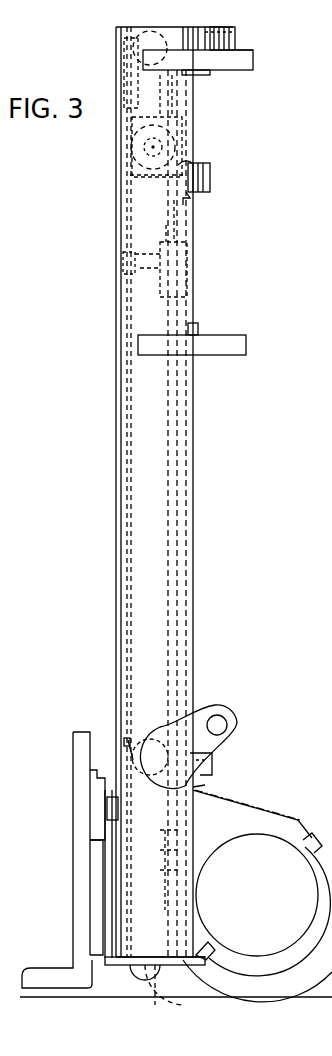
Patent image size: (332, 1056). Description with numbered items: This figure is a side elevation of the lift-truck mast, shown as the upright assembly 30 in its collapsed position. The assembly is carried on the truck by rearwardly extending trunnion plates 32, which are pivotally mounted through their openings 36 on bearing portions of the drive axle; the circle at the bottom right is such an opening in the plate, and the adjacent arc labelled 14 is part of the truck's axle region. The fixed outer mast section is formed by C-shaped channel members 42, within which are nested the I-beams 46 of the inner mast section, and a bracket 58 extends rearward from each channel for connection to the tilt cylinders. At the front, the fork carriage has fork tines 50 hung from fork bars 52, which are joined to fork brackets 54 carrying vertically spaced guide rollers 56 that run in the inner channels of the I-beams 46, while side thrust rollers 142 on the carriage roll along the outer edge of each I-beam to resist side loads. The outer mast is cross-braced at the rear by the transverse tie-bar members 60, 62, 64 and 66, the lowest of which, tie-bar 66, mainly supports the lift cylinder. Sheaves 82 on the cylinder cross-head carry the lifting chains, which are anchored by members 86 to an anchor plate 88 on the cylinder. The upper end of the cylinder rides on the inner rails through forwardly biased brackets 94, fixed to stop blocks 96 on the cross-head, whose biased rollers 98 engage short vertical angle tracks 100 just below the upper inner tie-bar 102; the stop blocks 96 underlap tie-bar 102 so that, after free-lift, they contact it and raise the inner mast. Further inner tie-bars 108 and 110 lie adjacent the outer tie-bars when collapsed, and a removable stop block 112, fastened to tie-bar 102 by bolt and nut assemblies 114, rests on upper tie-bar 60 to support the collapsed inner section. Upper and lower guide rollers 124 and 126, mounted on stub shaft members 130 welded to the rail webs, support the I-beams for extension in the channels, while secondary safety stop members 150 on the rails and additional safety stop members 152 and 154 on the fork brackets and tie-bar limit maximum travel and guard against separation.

The wheel 14 is at (252, 988).
The upright assembly 30 is at (206, 541).
The trunnion plates 32 is at (272, 814).
The openings 36 is at (318, 906).
The channel members 42 is at (188, 392).
The I-beams 46 is at (114, 393).
The fork tines 50 is at (80, 925).
The fork bars 52 is at (94, 790).
The fork brackets 54 is at (104, 858).
The guide rollers 56 is at (130, 740).
The bracket 58 is at (205, 708).
The tie-bar member 60 is at (254, 62).
The tie-bar member 62 is at (232, 345).
The tie-bar member 64 is at (222, 768).
The tie-bar member 66 is at (208, 950).
The sheaves 82 is at (118, 166).
The anchor members 86 is at (190, 243).
The anchor plate 88 is at (124, 272).
The brackets 94 is at (212, 178).
The stop blocks 96 is at (210, 166).
The biased roller 98 is at (198, 196).
The angle tracks 100 is at (198, 112).
The tie-bar member 102 is at (206, 42).
The tie-bar 108 is at (197, 330).
The tie-bar 110 is at (210, 786).
The stop block 112 is at (236, 40).
The bolt and nut assemblies 114 is at (240, 52).
The upper guide rollers 124 is at (120, 55).
The lower guide rollers 126 is at (186, 1005).
The stub shaft members 130 is at (118, 36).
The side thrust rollers 142 is at (106, 808).
The secondary safety stop members 150 is at (228, 799).
The safety stop member 152 is at (196, 854).
The safety stop member 154 is at (190, 26).